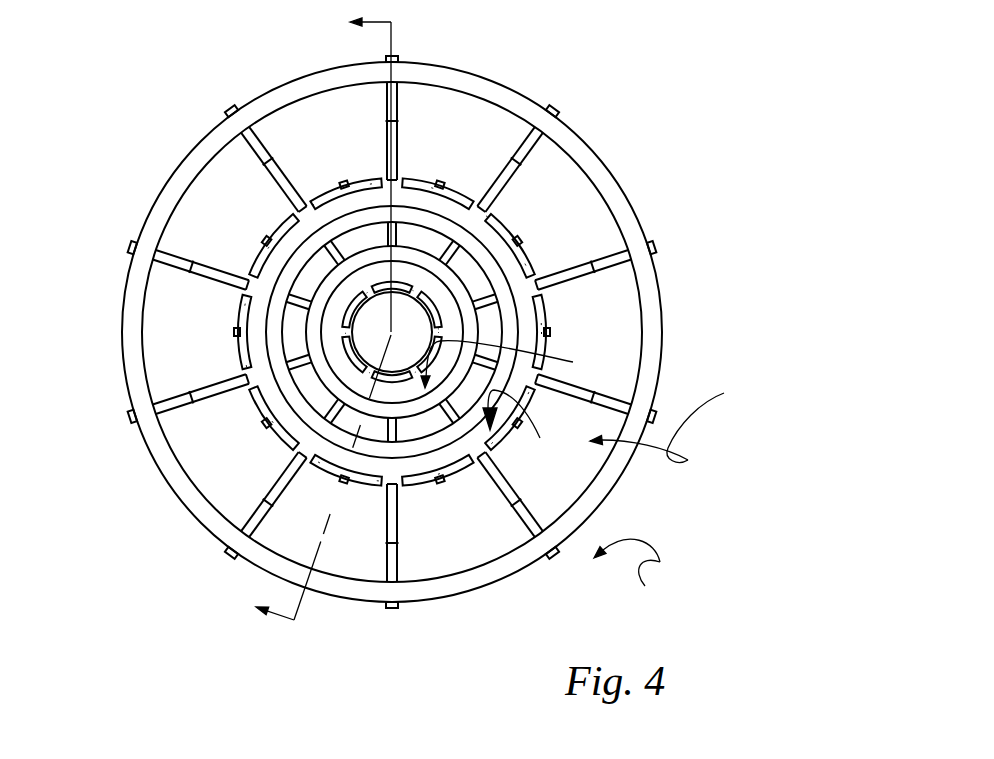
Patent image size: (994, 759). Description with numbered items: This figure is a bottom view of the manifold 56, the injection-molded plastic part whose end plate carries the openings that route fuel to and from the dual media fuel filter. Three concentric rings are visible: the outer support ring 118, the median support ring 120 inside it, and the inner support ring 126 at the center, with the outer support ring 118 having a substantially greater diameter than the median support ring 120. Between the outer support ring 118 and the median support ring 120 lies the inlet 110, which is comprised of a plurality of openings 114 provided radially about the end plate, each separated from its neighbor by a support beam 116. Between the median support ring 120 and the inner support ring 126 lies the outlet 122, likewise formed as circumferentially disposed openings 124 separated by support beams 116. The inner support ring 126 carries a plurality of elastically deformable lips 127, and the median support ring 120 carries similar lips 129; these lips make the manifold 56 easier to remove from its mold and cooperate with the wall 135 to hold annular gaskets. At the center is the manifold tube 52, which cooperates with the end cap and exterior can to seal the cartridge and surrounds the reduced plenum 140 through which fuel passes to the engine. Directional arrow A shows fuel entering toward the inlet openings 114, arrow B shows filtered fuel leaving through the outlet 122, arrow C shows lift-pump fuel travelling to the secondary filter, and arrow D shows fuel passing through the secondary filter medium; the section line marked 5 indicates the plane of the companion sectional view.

The manifold 56 is at (589, 68).
The outer support ring 118 is at (653, 318).
The openings 114 is at (453, 110).
The support beam 116 is at (170, 263).
The inlet 110 is at (406, 333).
The elastically deformable lips 129 is at (281, 218).
The median support ring 120 is at (528, 346).
The outlet 122 is at (298, 460).
The openings 124 is at (298, 390).
The wall 135 is at (318, 235).
The manifold tube 52 is at (390, 343).
The inner support ring 126 is at (376, 278).
The reduced plenum 140 is at (410, 284).
The elastically deformable lips 127 is at (403, 288).
The section line 5- 5 is at (337, 327).
The directional arrow A is at (668, 417).
The directional arrow B is at (522, 427).
The directional arrow C is at (630, 576).
The directional arrow D is at (510, 364).